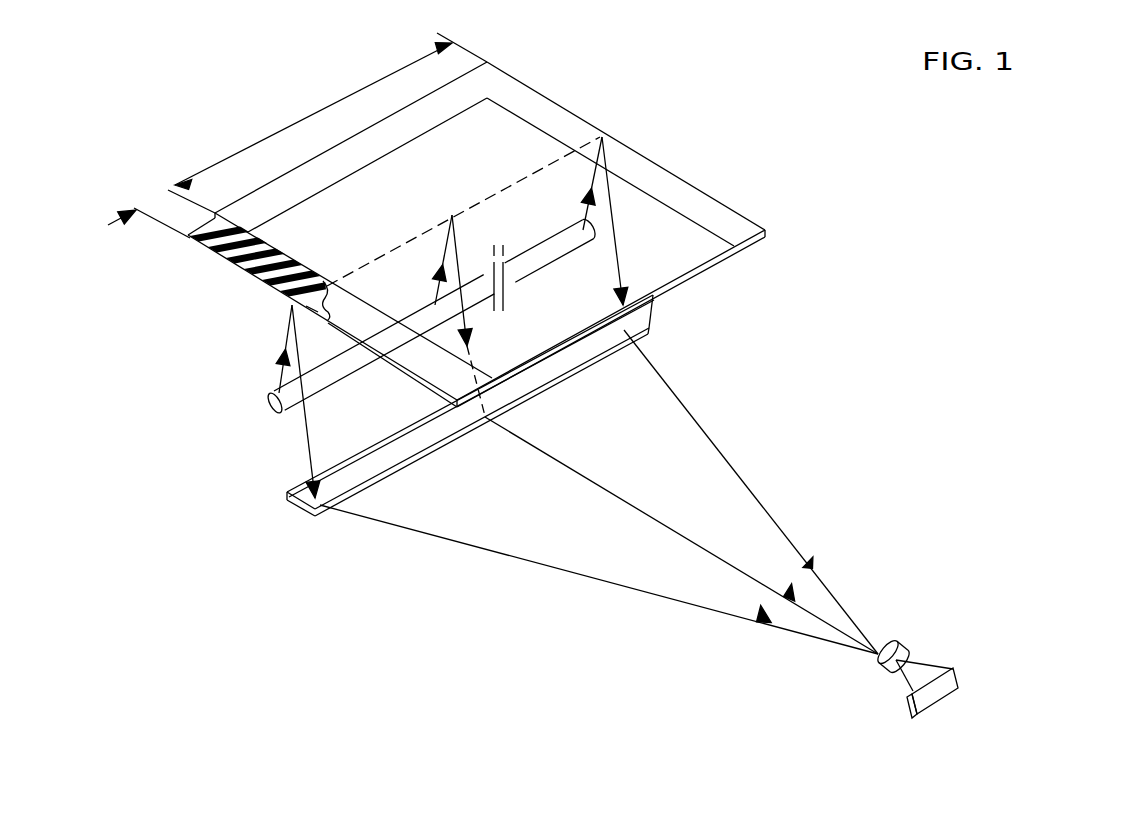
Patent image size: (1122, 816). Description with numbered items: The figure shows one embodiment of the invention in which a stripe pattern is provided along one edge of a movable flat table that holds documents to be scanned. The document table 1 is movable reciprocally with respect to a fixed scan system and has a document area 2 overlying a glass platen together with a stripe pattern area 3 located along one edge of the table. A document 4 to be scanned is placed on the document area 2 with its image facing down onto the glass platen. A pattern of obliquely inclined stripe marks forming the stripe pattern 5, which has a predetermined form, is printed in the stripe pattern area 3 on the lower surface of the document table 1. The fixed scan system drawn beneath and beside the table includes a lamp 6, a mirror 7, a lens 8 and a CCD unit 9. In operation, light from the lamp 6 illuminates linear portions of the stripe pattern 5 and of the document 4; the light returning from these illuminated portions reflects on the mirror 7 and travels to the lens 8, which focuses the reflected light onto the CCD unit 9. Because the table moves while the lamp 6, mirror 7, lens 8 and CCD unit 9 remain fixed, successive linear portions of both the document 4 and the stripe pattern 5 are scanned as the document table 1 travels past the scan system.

The document table 1 is at (627, 58).
The document area 2 is at (327, 123).
The stripe pattern area 3 is at (157, 197).
The document 4 is at (657, 225).
The stripe pattern 5 is at (283, 300).
The lamp 6 is at (273, 408).
The mirror 7 is at (312, 512).
The lens 8 is at (898, 640).
The CCD unit 9 is at (960, 677).